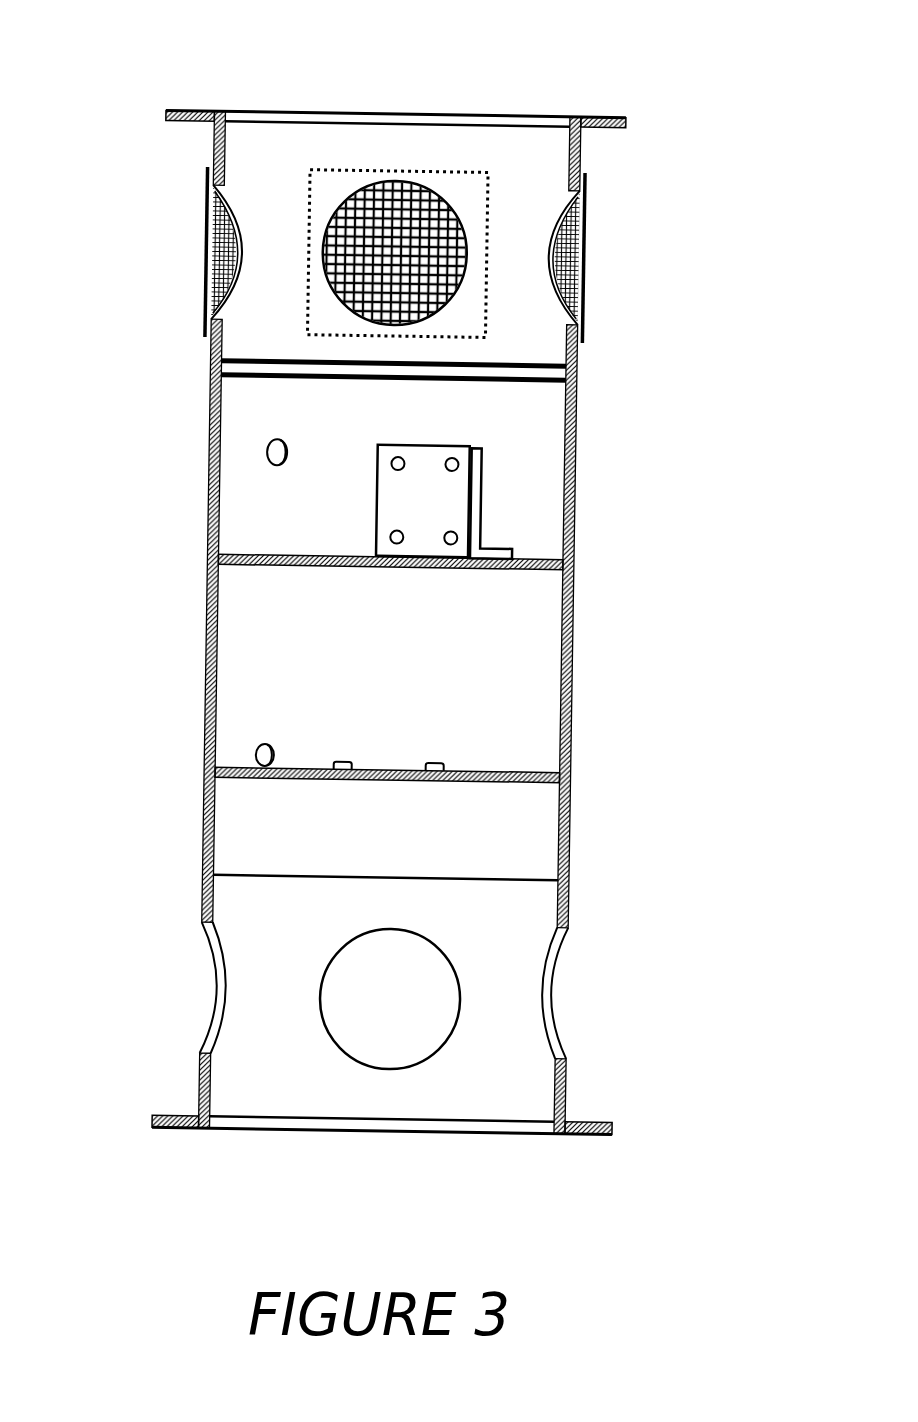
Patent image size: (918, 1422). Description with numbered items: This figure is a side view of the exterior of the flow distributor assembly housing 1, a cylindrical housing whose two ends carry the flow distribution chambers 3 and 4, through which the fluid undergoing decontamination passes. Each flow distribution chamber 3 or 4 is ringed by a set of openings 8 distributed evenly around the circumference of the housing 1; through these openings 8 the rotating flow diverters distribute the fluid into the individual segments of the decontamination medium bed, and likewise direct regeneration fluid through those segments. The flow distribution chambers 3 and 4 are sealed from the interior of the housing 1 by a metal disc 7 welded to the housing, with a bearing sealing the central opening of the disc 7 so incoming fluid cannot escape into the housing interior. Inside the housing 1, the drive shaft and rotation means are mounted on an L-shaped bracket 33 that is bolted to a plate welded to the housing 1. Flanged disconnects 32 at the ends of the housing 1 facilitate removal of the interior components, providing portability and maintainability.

The housing 1 is at (572, 715).
The flow distribution chamber 3 is at (515, 912).
The flow distribution chamber 4 is at (538, 162).
The metal disc 7 is at (522, 772).
The openings 8 is at (557, 1028).
The flanged disconnects 32 is at (202, 112).
The L-shaped bracket 33 is at (480, 495).